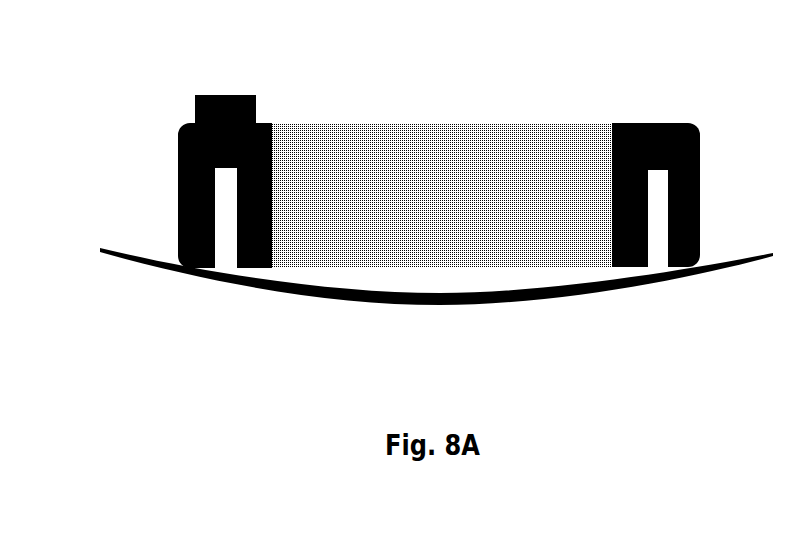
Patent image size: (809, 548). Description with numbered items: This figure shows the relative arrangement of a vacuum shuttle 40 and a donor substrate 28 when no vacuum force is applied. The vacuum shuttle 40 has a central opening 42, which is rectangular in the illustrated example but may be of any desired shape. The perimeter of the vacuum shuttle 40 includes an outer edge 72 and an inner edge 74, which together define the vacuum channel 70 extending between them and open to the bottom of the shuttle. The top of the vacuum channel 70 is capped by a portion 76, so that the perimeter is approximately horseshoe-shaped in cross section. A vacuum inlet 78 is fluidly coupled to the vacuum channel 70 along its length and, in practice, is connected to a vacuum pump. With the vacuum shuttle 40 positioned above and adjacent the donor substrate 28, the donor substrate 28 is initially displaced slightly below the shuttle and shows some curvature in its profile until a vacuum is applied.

The vacuum shuttle 40 is at (469, 82).
The central opening 42 is at (457, 213).
The outer edge 72 is at (188, 185).
The inner edge 74 is at (615, 212).
The portion 76 is at (662, 125).
The vacuum inlet 78 is at (232, 96).
The vacuum channel 70 is at (228, 263).
The donor substrate 28 is at (538, 298).